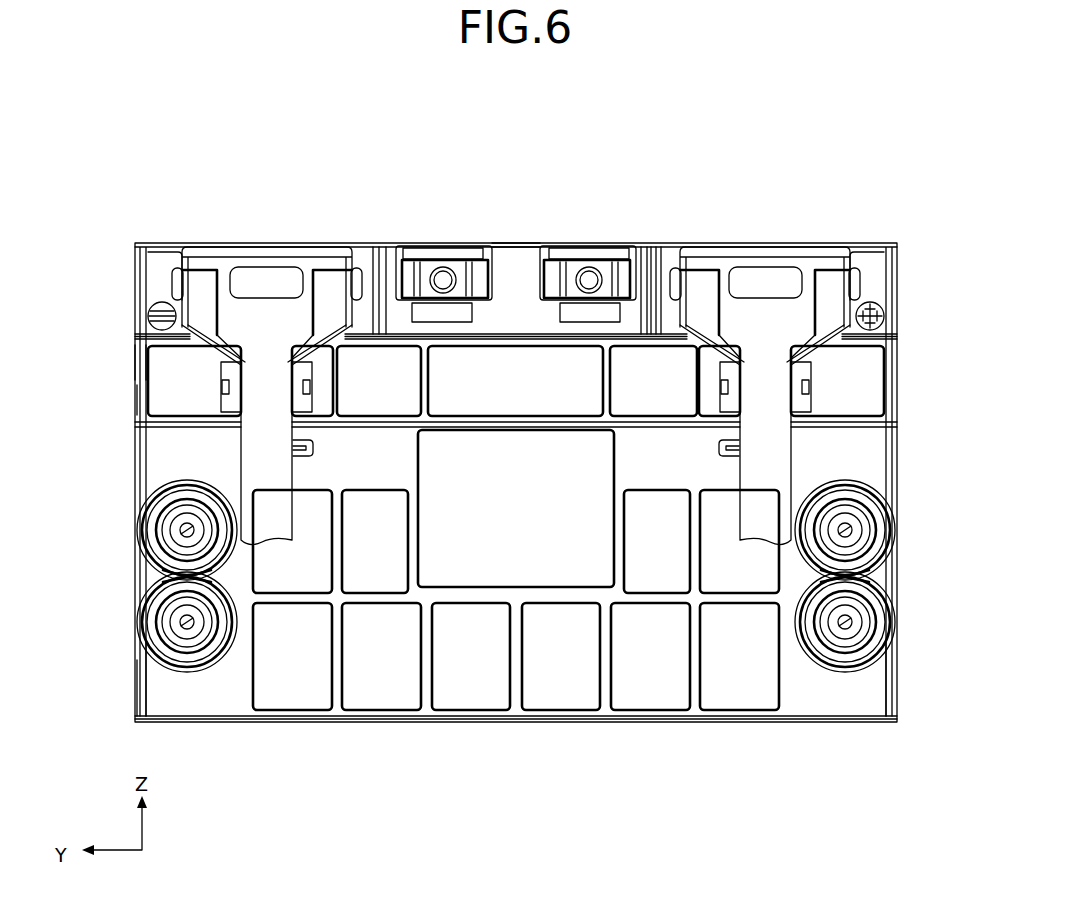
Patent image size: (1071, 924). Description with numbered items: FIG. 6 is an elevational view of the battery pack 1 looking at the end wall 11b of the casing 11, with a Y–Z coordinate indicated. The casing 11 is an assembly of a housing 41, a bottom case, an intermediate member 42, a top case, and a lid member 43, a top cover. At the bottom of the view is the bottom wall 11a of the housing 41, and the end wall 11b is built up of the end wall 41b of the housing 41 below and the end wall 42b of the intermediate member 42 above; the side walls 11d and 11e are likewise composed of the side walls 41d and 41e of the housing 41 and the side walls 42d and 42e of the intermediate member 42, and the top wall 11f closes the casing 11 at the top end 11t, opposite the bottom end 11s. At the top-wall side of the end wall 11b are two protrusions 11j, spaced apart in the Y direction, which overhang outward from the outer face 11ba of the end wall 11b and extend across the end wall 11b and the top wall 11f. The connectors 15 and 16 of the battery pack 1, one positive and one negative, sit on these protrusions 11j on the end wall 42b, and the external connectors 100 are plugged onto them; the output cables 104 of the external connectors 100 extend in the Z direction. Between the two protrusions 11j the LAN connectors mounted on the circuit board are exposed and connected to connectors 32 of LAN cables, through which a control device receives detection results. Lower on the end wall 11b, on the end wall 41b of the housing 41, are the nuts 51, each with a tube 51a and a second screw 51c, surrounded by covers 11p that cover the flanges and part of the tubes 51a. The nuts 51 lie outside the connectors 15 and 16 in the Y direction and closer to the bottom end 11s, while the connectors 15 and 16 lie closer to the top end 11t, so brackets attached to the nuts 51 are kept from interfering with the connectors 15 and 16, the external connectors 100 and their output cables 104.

The battery pack 1 is at (178, 154).
The casing 11 is at (152, 234).
The protrusions 11j is at (158, 278).
The side wall 42e is at (884, 314).
The side wall 42d is at (146, 362).
The side wall 11d is at (146, 395).
The external connectors 100 is at (248, 242).
The connector 16 is at (268, 282).
The connector 15 is at (763, 282).
The connectors of LAN cables 32 is at (433, 242).
The top wall 11f is at (510, 242).
The lid member 43 is at (680, 210).
The top end 11t is at (667, 242).
The side wall 11e is at (867, 402).
The end wall 42b is at (887, 425).
The intermediate member 42 is at (560, 406).
The output cables 104 is at (263, 457).
The end wall 41b is at (378, 692).
The outer face 11ba is at (572, 692).
The end wall 11b is at (594, 701).
The bottom end 11s is at (512, 720).
The bottom wall 11a is at (455, 720).
The housing 41 is at (516, 615).
The side wall 41d is at (146, 657).
The side wall 41e is at (893, 697).
The tubes 51a is at (892, 539).
The nuts 51 is at (516, 640).
The covers 11p is at (163, 517).
The second screws 51c is at (197, 532).